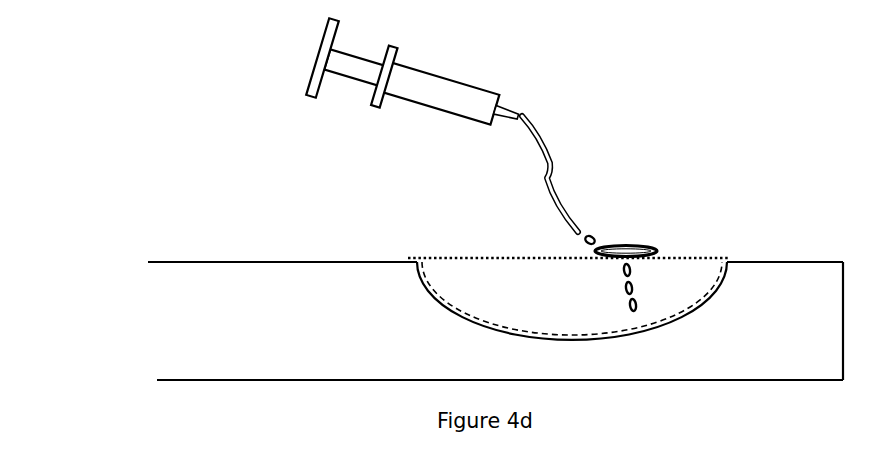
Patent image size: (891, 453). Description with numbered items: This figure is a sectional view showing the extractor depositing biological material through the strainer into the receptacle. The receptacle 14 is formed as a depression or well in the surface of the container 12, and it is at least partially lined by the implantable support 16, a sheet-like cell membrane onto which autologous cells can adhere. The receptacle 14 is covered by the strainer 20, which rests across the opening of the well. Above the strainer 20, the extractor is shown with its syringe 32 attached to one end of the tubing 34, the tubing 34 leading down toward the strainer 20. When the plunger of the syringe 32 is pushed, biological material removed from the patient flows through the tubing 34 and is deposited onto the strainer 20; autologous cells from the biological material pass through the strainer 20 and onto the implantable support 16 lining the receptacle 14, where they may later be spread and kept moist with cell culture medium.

The container 12 is at (183, 262).
The receptacle 14 is at (718, 283).
The implantable support 16 is at (610, 329).
The strainer 20 is at (460, 258).
The syringe 32 is at (453, 80).
The tubing 34 is at (553, 152).